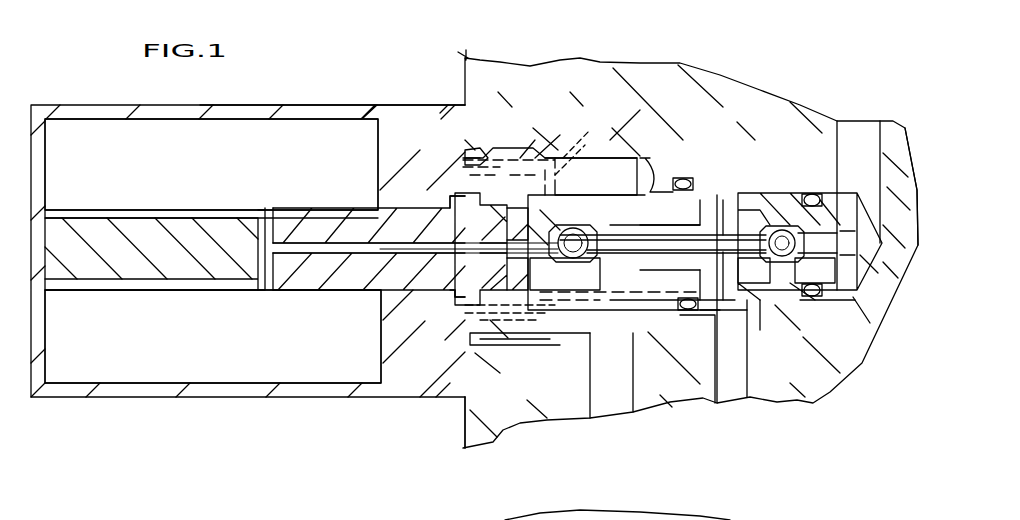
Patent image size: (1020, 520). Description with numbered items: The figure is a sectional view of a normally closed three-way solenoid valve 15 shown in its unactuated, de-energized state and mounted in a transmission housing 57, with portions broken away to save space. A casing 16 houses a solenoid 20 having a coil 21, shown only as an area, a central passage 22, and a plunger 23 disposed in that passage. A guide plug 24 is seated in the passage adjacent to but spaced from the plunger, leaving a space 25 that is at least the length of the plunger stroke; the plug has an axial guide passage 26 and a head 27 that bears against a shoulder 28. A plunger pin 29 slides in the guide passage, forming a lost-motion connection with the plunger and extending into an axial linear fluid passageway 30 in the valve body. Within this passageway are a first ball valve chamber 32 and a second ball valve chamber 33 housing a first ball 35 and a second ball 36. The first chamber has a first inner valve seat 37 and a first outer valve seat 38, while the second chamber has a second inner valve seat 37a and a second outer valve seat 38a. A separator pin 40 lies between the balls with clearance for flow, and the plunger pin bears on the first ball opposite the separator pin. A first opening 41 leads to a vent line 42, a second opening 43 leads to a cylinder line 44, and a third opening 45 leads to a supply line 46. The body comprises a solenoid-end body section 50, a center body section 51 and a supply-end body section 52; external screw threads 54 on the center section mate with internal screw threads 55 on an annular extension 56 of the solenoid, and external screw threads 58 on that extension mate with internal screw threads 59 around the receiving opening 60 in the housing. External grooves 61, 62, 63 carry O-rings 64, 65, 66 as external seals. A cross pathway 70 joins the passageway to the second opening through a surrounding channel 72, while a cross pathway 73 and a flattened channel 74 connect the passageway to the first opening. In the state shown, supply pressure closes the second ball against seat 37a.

The normally closed valve 15 is at (399, 422).
The casing 16 is at (243, 105).
The solenoid 20 is at (236, 397).
The coil 21 is at (146, 164).
The central passage 22 is at (236, 290).
The plunger 23 is at (190, 256).
The guide plug 24 is at (360, 232).
The space 25 is at (268, 208).
The axial guide passage 26 is at (432, 253).
The head 27 is at (452, 296).
The shoulder 28 is at (452, 200).
The plunger pin 29 is at (381, 253).
The axial linear fluid passageway 30 is at (482, 226).
The first ball valve chamber 32 is at (578, 230).
The second ball valve chamber 33 is at (792, 228).
The first ball 35 is at (590, 200).
The second ball 36 is at (770, 300).
The first inner valve seat 37 is at (595, 256).
The second inner valve seat 37a is at (755, 270).
The first outer valve seat 38 is at (568, 270).
The second outer valve seat 38a is at (815, 270).
The separator pin 40 is at (692, 228).
The first opening 41 is at (592, 345).
The vent line 42 is at (634, 385).
The second opening 43 is at (716, 338).
The cylinder line 44 is at (748, 382).
The third opening 45 is at (872, 222).
The supply line 46 is at (848, 130).
The solenoid-end body section 50 is at (530, 310).
The center body section 51 is at (648, 170).
The supply-end body section 52 is at (748, 308).
The external screw threads 54 is at (548, 182).
The internal screw threads 55 is at (612, 150).
The annular extension 56 is at (512, 150).
The transmission housing 57 is at (700, 112).
The external screw threads 58 is at (545, 145).
The internal screw threads 59 is at (580, 142).
The receiving opening 60 is at (480, 150).
The external groove 61 is at (830, 292).
The external groove 62 is at (688, 178).
The external groove 63 is at (470, 146).
The O-ring 64 is at (812, 298).
The O-ring 65 is at (705, 180).
The O-ring 66 is at (466, 156).
The cross pathway 70 is at (725, 270).
The channel 72 is at (738, 190).
The cross pathway 73 is at (478, 262).
The channel 74 is at (622, 188).